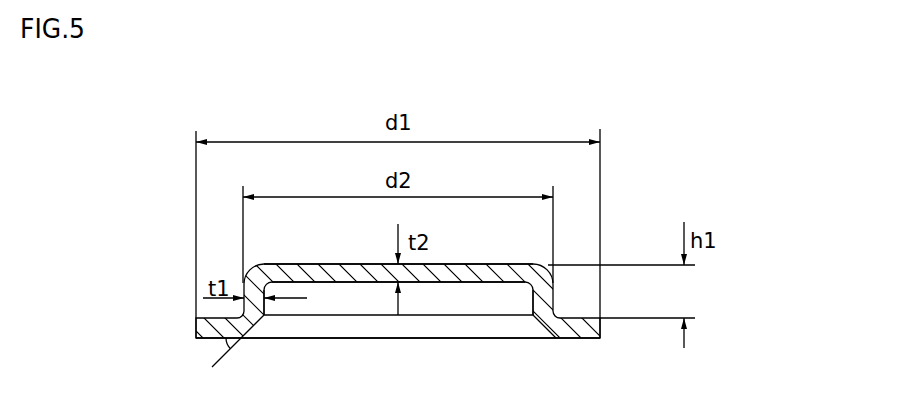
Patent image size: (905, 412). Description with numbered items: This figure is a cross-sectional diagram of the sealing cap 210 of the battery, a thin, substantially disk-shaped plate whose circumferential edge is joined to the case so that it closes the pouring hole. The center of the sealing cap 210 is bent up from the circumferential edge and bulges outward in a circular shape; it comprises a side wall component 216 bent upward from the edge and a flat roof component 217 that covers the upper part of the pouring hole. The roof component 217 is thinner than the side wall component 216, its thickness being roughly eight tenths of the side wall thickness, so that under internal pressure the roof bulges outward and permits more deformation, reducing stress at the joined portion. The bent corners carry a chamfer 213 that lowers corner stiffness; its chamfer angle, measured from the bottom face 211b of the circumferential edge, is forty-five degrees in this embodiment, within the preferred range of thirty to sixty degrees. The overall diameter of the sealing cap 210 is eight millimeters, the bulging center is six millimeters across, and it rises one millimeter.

The sealing cap 210 is at (563, 246).
The bottom face of the circumferential edge 211b is at (200, 339).
The chamfer 213 is at (264, 316).
The side wall component 216 is at (281, 305).
The roof component 217 is at (463, 282).